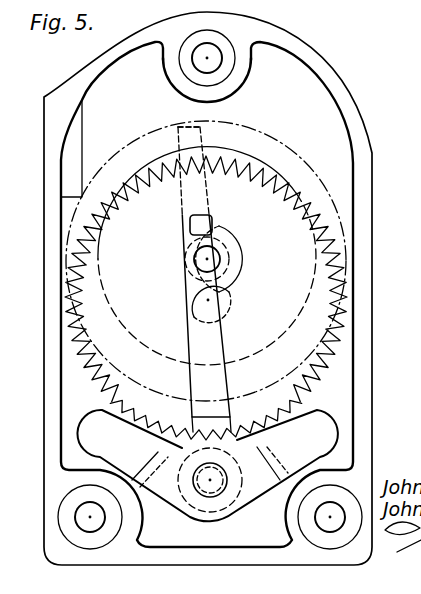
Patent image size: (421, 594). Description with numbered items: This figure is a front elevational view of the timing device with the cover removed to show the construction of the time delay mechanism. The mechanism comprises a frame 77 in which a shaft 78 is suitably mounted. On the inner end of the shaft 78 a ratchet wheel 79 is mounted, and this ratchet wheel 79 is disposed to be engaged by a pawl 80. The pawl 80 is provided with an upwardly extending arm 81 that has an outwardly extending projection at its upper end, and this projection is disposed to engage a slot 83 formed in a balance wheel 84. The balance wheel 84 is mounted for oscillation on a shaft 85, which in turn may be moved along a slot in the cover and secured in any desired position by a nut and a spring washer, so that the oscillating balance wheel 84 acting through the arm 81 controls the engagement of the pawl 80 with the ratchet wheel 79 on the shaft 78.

The frame 77 is at (303, 46).
The shaft 78 is at (226, 295).
The ratchet wheel 79 is at (262, 163).
The pawl 80 is at (325, 410).
The arm 81 is at (230, 408).
The slot 83 is at (207, 127).
The balance wheel 84 is at (310, 163).
The shaft 85 is at (226, 240).